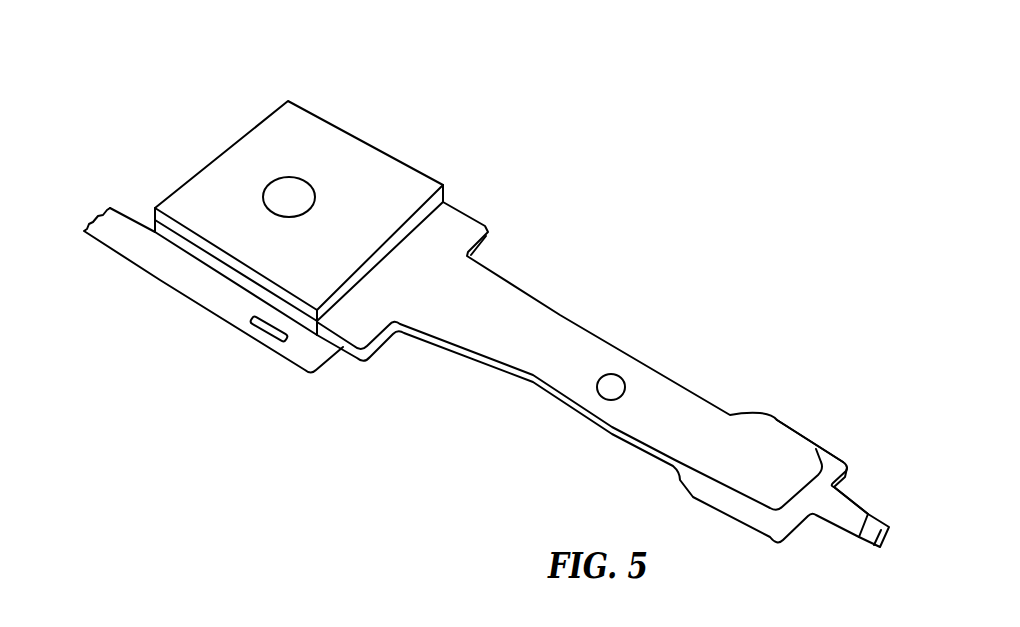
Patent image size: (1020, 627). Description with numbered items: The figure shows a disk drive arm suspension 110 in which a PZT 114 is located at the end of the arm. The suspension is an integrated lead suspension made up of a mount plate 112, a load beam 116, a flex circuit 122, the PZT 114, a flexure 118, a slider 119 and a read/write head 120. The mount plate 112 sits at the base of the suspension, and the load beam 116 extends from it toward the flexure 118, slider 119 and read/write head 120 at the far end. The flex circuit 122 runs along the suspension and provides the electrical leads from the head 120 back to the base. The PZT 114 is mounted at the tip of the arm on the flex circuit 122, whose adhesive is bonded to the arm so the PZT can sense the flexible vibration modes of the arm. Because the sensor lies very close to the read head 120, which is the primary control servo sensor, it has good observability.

The disk drive arm suspension 110 is at (505, 291).
The mount plate 112 is at (349, 150).
The PZT 114 is at (267, 340).
The load beam 116 is at (603, 357).
The flexure 118 is at (780, 432).
The slider 119 is at (857, 500).
The read/write head 120 is at (885, 518).
The flex circuit 122 is at (193, 302).